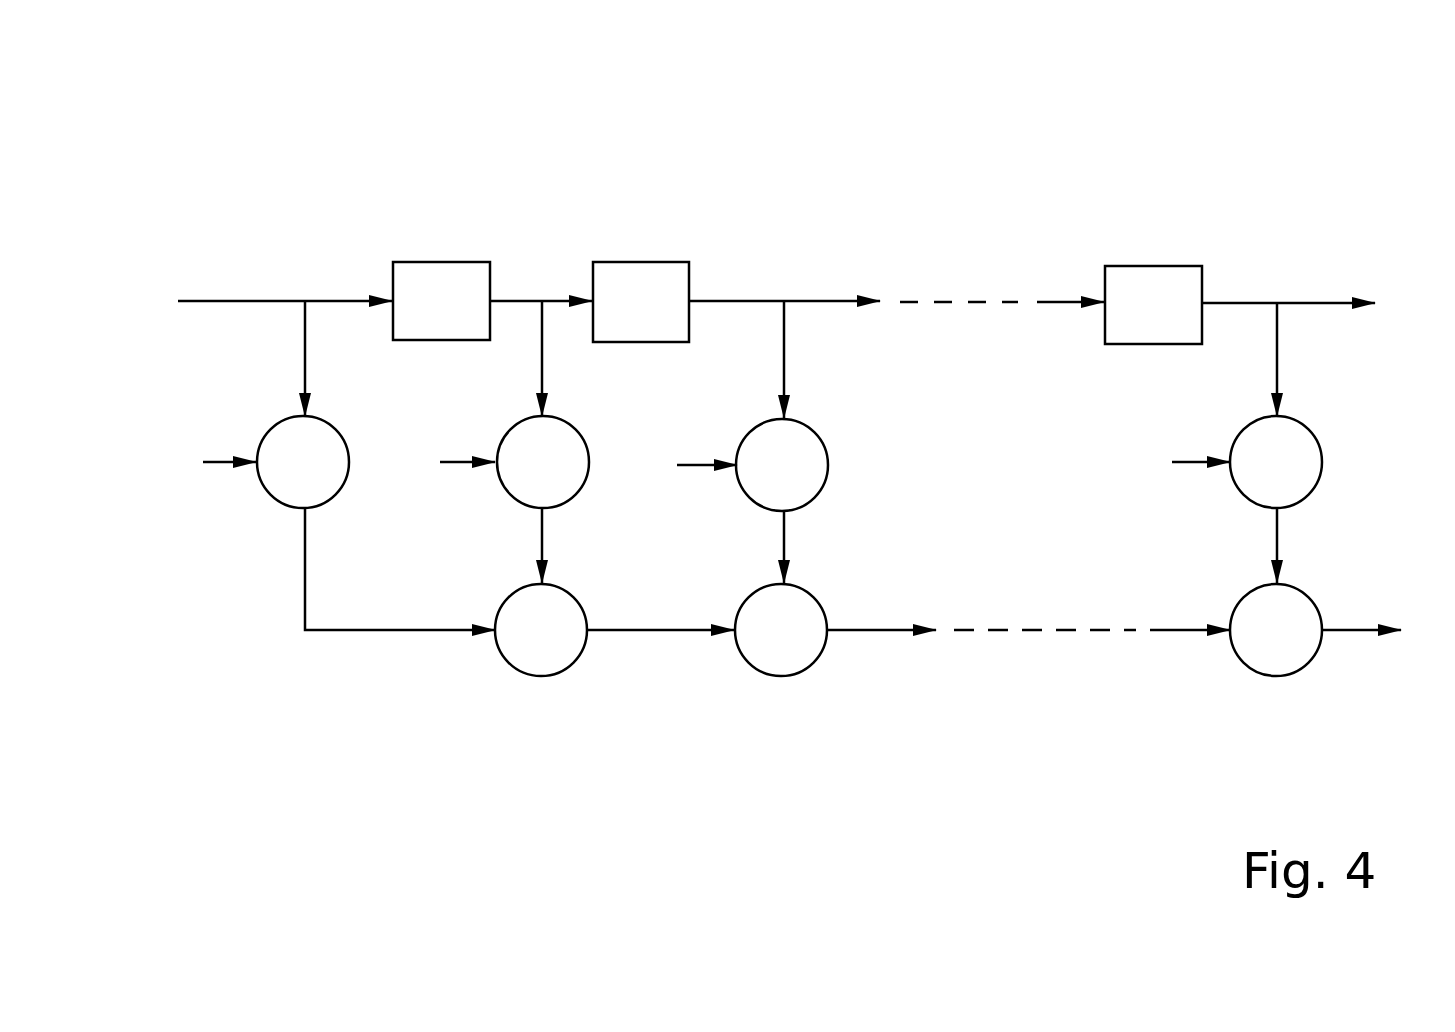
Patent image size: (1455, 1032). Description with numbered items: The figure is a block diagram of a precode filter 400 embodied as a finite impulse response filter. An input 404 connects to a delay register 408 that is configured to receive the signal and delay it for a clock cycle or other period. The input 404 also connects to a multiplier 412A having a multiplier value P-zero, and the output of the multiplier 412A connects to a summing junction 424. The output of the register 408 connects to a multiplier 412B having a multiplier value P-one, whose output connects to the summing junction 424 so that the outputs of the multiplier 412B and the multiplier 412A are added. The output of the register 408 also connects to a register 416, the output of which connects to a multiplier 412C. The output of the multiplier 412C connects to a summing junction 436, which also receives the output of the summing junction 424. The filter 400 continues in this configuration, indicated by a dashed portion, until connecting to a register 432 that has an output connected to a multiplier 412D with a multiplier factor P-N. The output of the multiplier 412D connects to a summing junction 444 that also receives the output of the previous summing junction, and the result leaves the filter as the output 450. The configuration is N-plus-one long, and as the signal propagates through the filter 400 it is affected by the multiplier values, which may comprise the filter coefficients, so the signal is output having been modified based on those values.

The precode filter 400 is at (737, 180).
The input 404 is at (237, 302).
The delay register 408 is at (434, 262).
The register 416 is at (630, 262).
The register 432 is at (1142, 266).
The multiplier 412A is at (266, 494).
The multiplier 412B is at (586, 437).
The multiplier 412C is at (822, 440).
The multiplier 412D is at (1323, 442).
The summing junction 424 is at (510, 668).
The summing junction 436 is at (758, 672).
The summing junction 444 is at (1243, 669).
The output 450 is at (1354, 640).